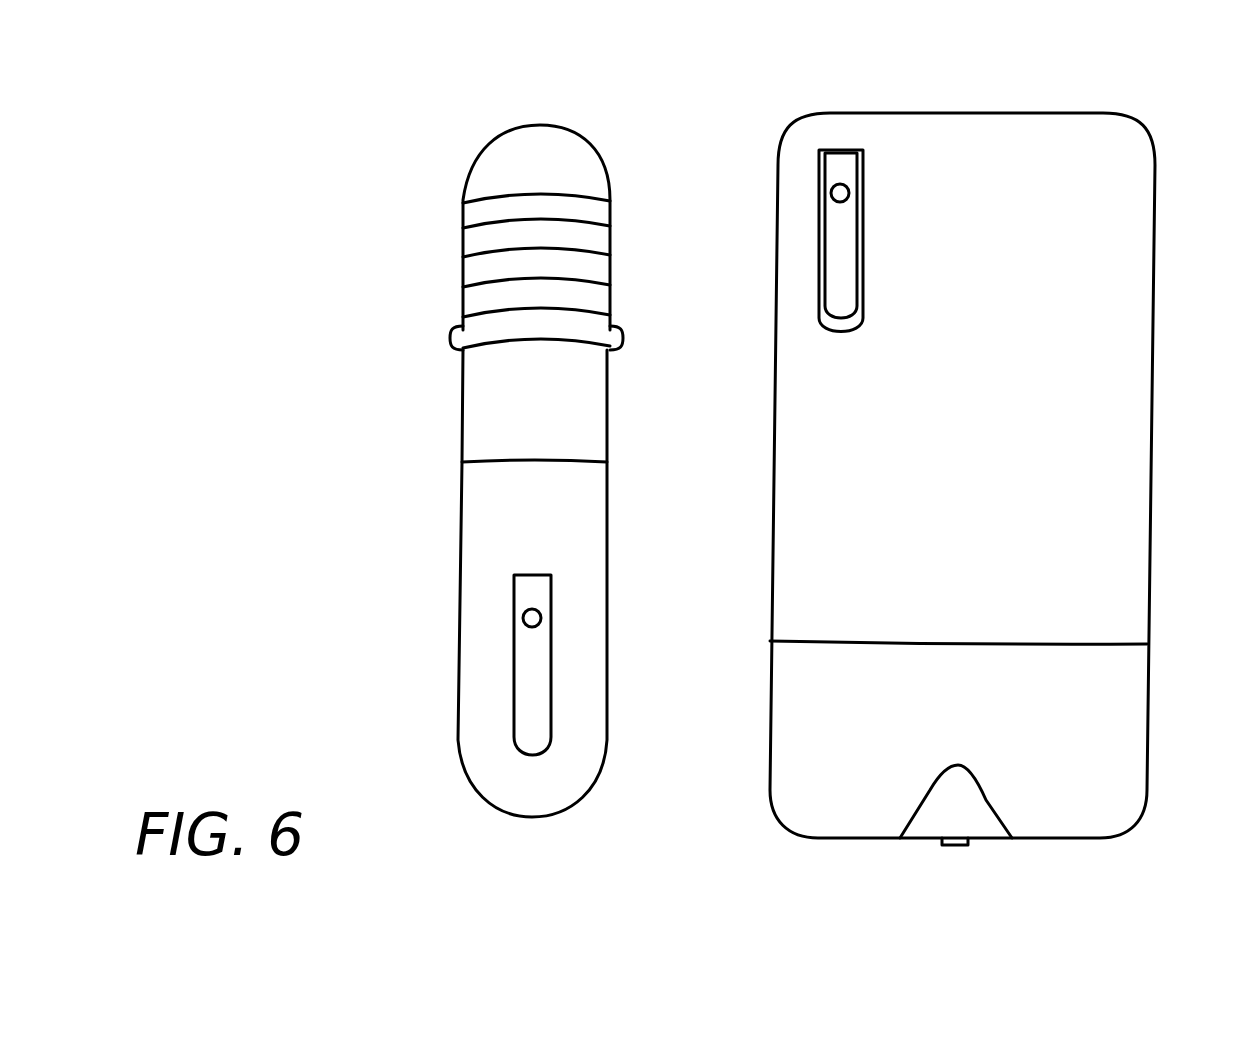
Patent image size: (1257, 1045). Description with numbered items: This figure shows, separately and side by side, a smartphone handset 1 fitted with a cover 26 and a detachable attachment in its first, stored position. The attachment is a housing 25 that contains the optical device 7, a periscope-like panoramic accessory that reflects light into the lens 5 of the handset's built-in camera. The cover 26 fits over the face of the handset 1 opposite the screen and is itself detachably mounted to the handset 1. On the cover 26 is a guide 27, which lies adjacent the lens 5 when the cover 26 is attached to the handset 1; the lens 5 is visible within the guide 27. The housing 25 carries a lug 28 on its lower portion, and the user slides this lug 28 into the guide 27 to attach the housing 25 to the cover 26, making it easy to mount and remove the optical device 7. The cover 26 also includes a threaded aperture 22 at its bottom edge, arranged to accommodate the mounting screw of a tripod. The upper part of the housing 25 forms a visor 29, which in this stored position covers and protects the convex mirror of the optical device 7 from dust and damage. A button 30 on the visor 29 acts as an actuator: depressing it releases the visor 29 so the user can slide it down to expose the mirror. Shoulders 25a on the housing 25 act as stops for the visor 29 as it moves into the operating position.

The handset 1 is at (1150, 642).
The lens 5 is at (840, 180).
The optical device 7 is at (460, 180).
The threaded aperture 22 is at (955, 848).
The housing 25 is at (458, 500).
The shoulders 25a is at (462, 462).
The cover 26 is at (1150, 244).
The guide 27 is at (820, 228).
The lug 28 is at (518, 675).
The visor 29 is at (464, 258).
The button 30 is at (620, 346).